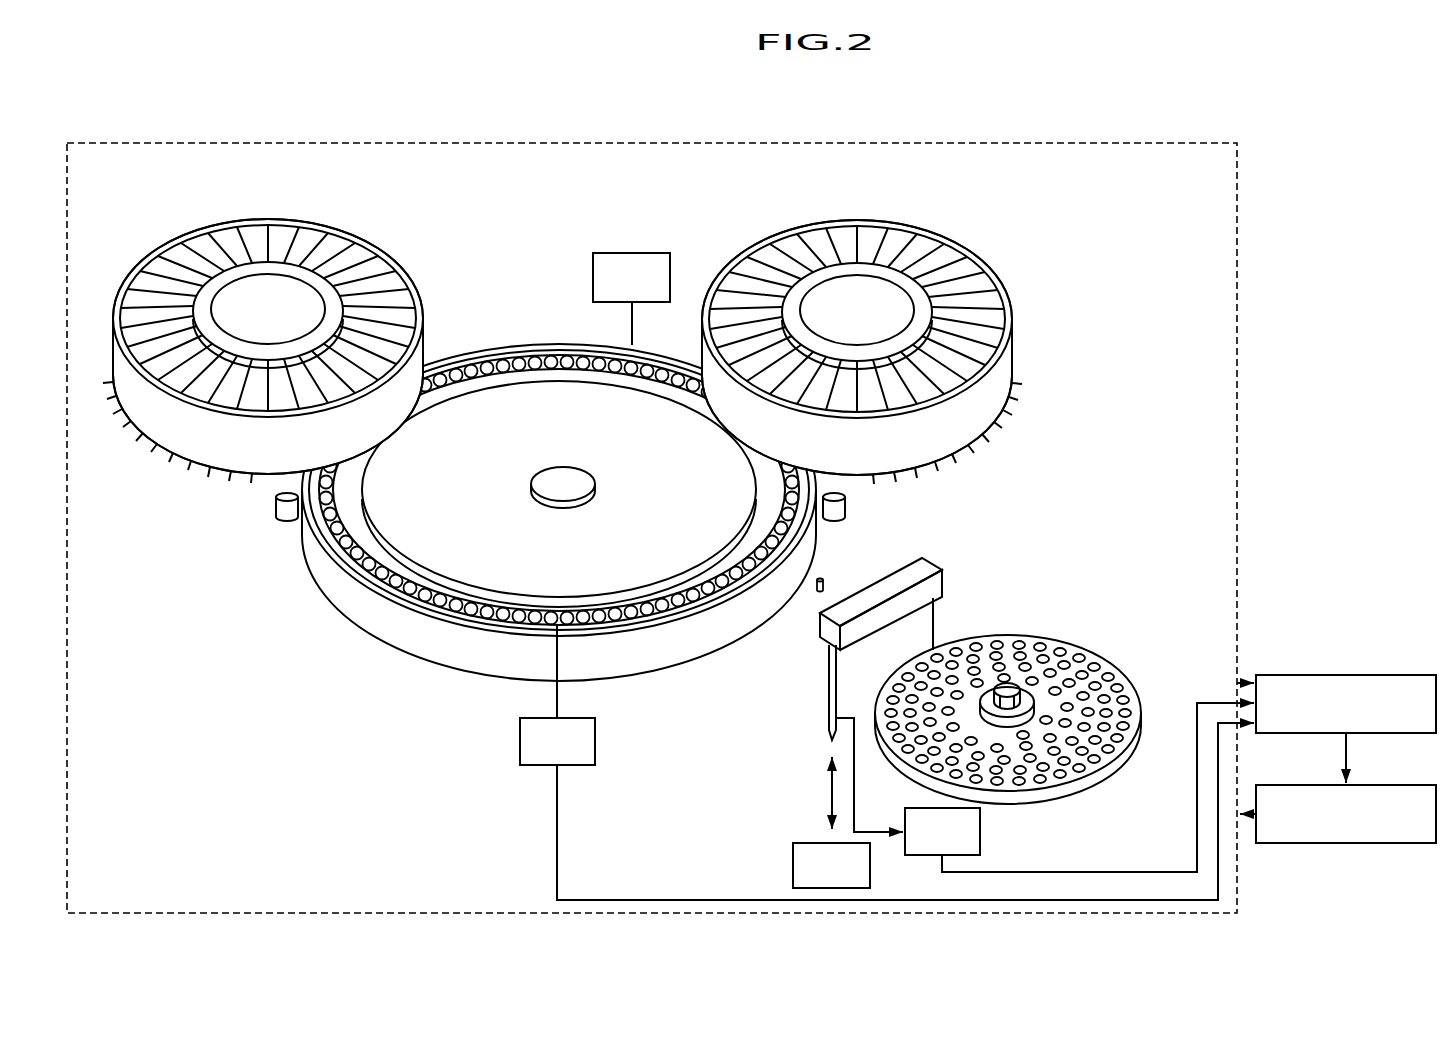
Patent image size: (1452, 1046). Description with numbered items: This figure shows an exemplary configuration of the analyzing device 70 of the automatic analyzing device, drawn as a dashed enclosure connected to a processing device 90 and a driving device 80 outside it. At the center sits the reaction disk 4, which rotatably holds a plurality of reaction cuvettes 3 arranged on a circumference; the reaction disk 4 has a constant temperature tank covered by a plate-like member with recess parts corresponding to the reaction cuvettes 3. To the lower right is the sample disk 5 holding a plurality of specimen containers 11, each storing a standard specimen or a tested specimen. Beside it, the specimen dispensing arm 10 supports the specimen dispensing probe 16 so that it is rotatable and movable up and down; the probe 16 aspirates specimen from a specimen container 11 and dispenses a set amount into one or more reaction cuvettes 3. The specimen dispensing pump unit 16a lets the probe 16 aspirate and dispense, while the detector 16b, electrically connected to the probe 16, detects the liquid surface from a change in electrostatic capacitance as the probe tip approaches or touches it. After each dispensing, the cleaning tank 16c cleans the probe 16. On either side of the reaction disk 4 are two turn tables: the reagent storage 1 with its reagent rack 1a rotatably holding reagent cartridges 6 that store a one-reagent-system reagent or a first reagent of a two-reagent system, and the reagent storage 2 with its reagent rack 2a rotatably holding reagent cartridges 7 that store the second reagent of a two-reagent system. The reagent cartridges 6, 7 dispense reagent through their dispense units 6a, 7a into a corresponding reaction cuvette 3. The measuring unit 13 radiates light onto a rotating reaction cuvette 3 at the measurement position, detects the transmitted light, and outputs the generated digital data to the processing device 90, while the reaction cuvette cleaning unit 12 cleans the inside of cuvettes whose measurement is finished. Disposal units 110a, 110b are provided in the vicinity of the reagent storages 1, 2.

The reagent storage 1 is at (271, 361).
The reagent rack 1a is at (268, 287).
The reagent storage 2 is at (881, 322).
The reagent rack 2a is at (857, 289).
The reaction cuvettes 3 is at (462, 602).
The reaction disk 4 is at (424, 594).
The sample disk 5 is at (1087, 780).
The reagent cartridges 6 is at (280, 306).
The dispense unit 6a is at (177, 473).
The reagent cartridges 7 is at (869, 306).
The dispense unit 7a is at (967, 433).
The specimen dispensing arm 10 is at (818, 624).
The specimen containers 11 is at (1057, 640).
The reaction cuvette cleaning unit 12 is at (631, 299).
The measuring unit 13 is at (887, 762).
The specimen dispensing probe 16 is at (935, 623).
The specimen dispensing pump unit 16a is at (831, 822).
The detector 16b is at (1045, 787).
The cleaning tank 16c is at (822, 577).
The analyzing device 70 is at (802, 146).
The driving device 80 is at (1372, 787).
The processing device 90 is at (1372, 679).
The disposal unit 110a is at (848, 506).
The disposal unit 110b is at (287, 519).